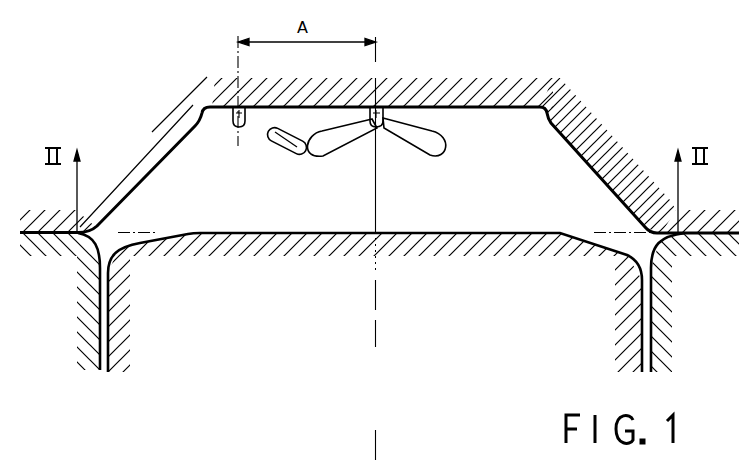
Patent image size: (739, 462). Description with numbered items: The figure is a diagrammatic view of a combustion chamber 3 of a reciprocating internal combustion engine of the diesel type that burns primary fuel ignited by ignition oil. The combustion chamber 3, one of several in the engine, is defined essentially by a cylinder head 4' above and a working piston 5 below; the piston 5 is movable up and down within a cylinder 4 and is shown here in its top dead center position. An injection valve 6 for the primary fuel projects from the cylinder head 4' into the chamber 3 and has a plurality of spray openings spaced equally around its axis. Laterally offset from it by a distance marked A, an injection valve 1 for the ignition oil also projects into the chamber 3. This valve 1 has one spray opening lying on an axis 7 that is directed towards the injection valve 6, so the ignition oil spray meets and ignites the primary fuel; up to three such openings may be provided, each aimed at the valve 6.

The injection valve for ignition oil 1 is at (236, 126).
The combustion chamber 3 is at (512, 195).
The cylinder 4 is at (379, 302).
The cylinder head 4' is at (379, 127).
The working piston 5 is at (541, 237).
The injection valve for primary fuel 6 is at (380, 127).
The axis 7 is at (290, 146).